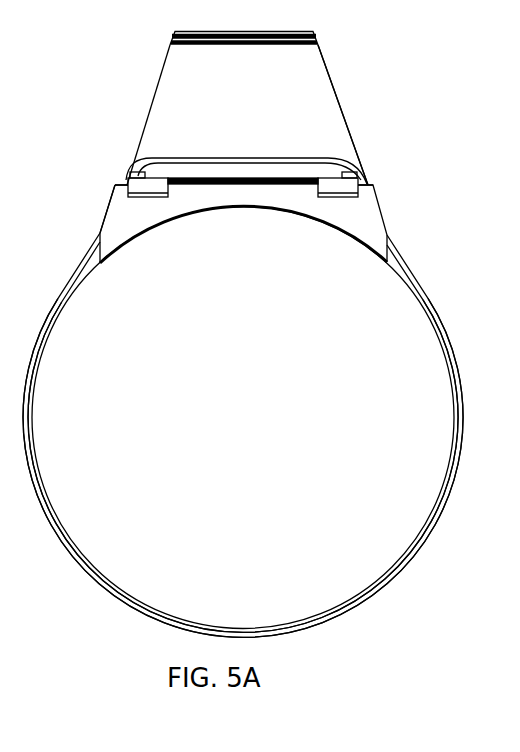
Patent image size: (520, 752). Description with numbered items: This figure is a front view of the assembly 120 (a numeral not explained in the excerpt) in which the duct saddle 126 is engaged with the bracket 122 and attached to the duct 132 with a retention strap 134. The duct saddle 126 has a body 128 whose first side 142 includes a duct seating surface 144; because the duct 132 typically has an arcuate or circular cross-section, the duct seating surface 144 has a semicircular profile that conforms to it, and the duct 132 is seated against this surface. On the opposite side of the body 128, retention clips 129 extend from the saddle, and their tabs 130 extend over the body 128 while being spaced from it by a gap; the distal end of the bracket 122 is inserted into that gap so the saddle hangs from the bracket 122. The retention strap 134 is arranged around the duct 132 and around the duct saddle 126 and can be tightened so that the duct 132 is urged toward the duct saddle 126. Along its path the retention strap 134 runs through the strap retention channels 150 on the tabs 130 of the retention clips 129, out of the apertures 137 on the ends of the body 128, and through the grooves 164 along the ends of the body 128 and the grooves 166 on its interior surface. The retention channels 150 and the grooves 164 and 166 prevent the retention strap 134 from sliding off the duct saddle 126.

The wearable device 120 is at (295, 148).
The bracket 122 is at (338, 50).
The duct saddle 126 is at (389, 191).
The body 128 is at (200, 197).
The retention clips 129 is at (361, 148).
The tabs 130 is at (165, 177).
The duct 132 is at (394, 277).
The retention strap 134 is at (233, 163).
The apertures 137 is at (98, 230).
The first side 142 is at (248, 211).
The duct seating surface 144 is at (305, 220).
The strap retention channels 150 is at (118, 164).
The grooves 164 is at (100, 238).
The grooves 166 is at (122, 183).